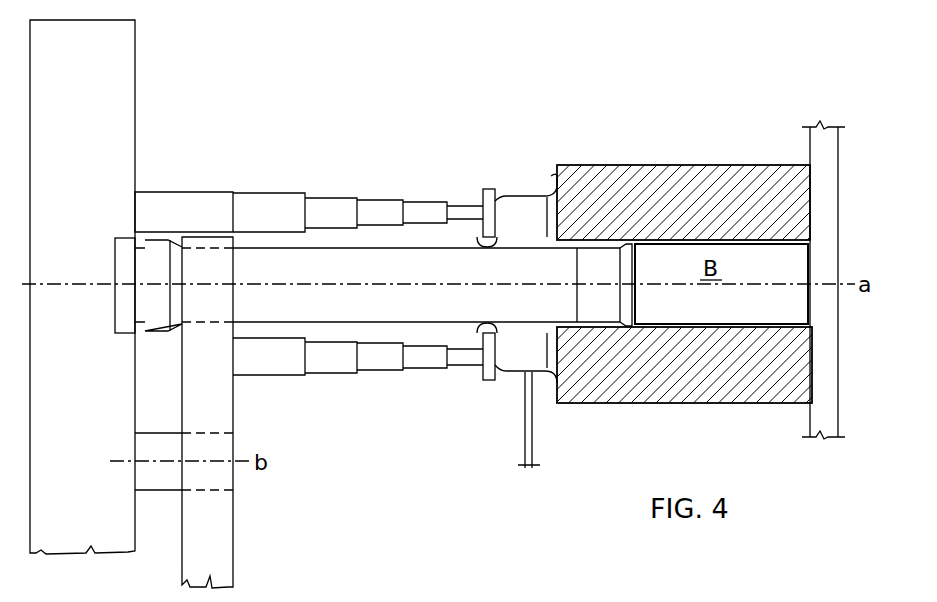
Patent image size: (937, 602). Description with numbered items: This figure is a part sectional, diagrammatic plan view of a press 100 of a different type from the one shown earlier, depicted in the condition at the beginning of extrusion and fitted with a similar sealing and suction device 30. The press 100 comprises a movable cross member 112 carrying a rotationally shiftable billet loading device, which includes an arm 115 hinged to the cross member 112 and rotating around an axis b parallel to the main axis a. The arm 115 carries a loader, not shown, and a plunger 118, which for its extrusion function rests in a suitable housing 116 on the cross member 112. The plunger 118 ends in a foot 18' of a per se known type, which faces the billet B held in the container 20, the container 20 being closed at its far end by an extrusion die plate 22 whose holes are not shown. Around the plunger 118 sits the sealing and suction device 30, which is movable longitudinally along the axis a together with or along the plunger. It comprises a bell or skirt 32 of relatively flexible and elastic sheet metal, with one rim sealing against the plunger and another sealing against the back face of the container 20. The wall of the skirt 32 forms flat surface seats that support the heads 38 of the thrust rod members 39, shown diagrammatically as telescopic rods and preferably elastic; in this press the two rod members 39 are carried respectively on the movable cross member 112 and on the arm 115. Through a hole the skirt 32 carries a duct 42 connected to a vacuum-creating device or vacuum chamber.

The press 100 is at (435, 72).
The movable cross member 112 is at (120, 65).
The arm 115 is at (220, 552).
The housing 116 is at (117, 268).
The plunger 118 is at (367, 315).
The foot of the plunger 18' is at (604, 221).
The container 20 is at (703, 193).
The extrusion die plate 22 is at (828, 387).
The sealing and suction device 30 is at (545, 408).
The bell or skirt 32 is at (527, 197).
The heads 38 is at (483, 196).
The thrust rod members 39 is at (330, 190).
The duct 42 is at (525, 450).